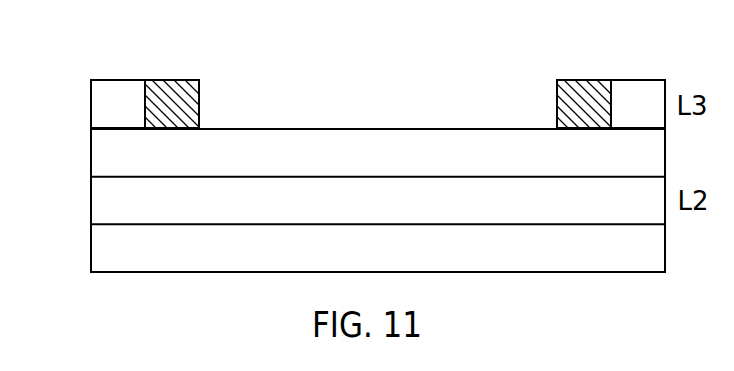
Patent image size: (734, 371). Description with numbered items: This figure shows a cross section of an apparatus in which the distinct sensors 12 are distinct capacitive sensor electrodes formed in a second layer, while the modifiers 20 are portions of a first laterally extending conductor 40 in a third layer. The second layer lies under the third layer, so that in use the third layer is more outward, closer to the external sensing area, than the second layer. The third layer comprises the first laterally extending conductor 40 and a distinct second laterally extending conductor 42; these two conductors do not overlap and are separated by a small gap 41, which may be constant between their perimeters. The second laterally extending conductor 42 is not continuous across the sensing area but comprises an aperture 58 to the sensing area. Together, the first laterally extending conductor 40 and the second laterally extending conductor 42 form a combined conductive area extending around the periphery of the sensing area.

The distinct sensors 12 is at (112, 200).
The modifiers 20 is at (133, 117).
The first laterally extending conductor 40 is at (112, 79).
The gap 41 is at (145, 79).
The second laterally extending conductor 42 is at (177, 79).
The aperture 58 is at (413, 112).